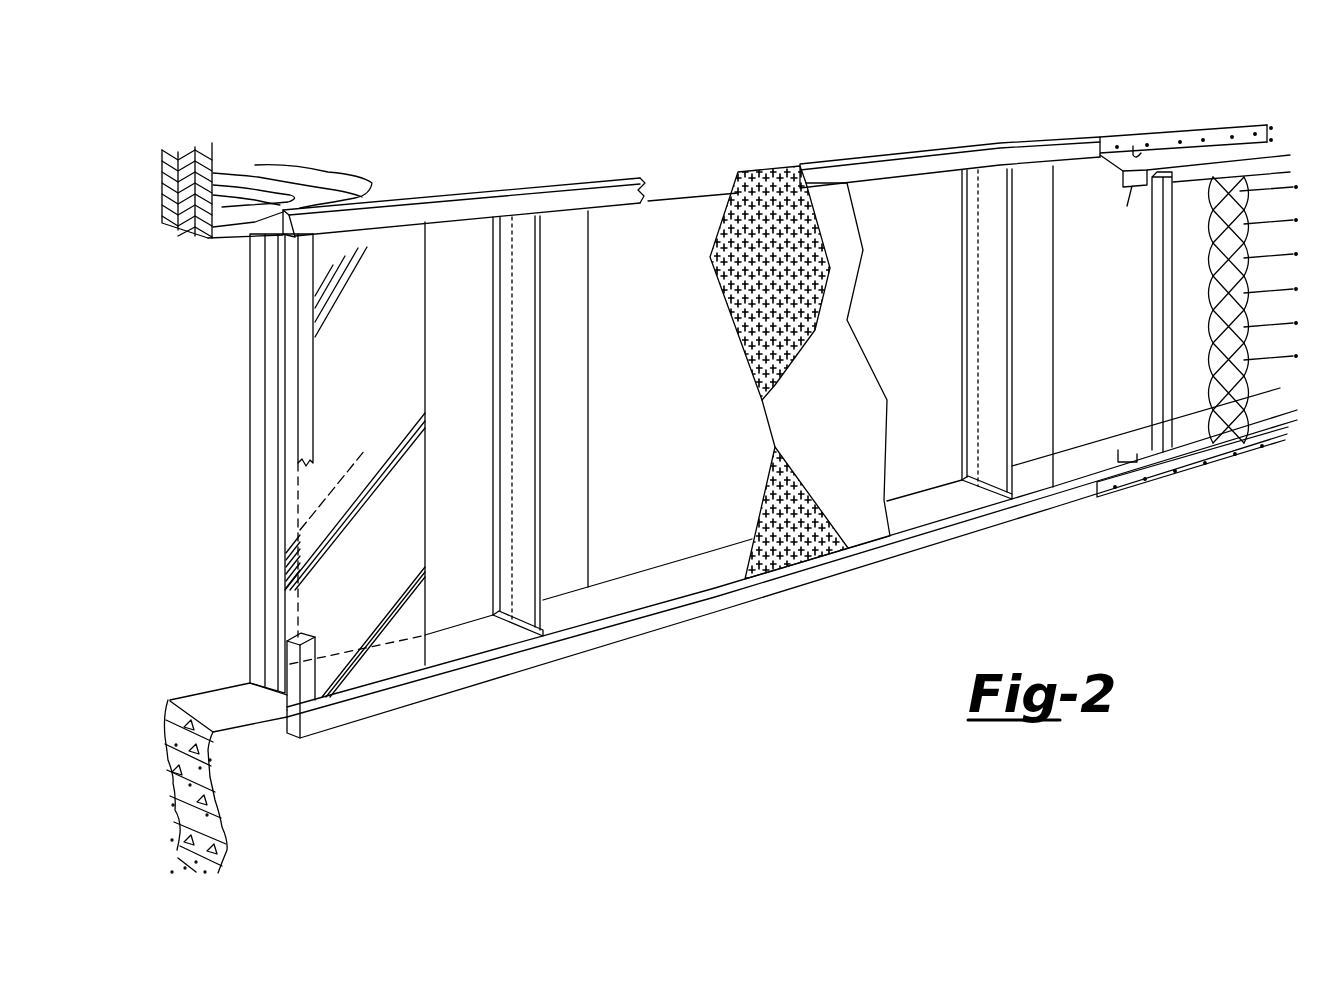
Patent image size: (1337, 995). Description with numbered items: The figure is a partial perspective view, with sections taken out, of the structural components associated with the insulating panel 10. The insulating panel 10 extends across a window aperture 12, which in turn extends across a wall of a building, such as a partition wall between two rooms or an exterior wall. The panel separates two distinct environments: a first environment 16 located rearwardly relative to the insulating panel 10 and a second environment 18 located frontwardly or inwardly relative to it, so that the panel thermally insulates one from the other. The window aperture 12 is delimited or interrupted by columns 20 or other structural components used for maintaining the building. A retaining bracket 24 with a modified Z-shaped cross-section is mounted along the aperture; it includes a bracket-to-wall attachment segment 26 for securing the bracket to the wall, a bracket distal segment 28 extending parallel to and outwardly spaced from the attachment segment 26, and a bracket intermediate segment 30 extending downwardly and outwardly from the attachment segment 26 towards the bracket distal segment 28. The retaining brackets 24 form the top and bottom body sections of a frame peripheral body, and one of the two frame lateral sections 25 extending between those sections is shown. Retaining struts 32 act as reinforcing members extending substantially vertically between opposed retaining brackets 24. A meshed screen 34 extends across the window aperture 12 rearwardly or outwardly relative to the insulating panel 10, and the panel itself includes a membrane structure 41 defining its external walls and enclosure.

The insulating panel 10 is at (1291, 394).
The window aperture 12 is at (482, 628).
The first environment 16 is at (472, 375).
The second environment 18 is at (1086, 587).
The column 20 is at (570, 597).
The retaining bracket 24 is at (1135, 152).
The frame lateral section 25 is at (298, 380).
The bracket-to-wall attachment segment 26 is at (1107, 142).
The bracket distal segment 28 is at (1097, 326).
The bracket intermediate segment 30 is at (1125, 163).
The retaining strut 32 is at (1152, 323).
The meshed screen 34 is at (780, 170).
The membrane structure 41 is at (1222, 190).